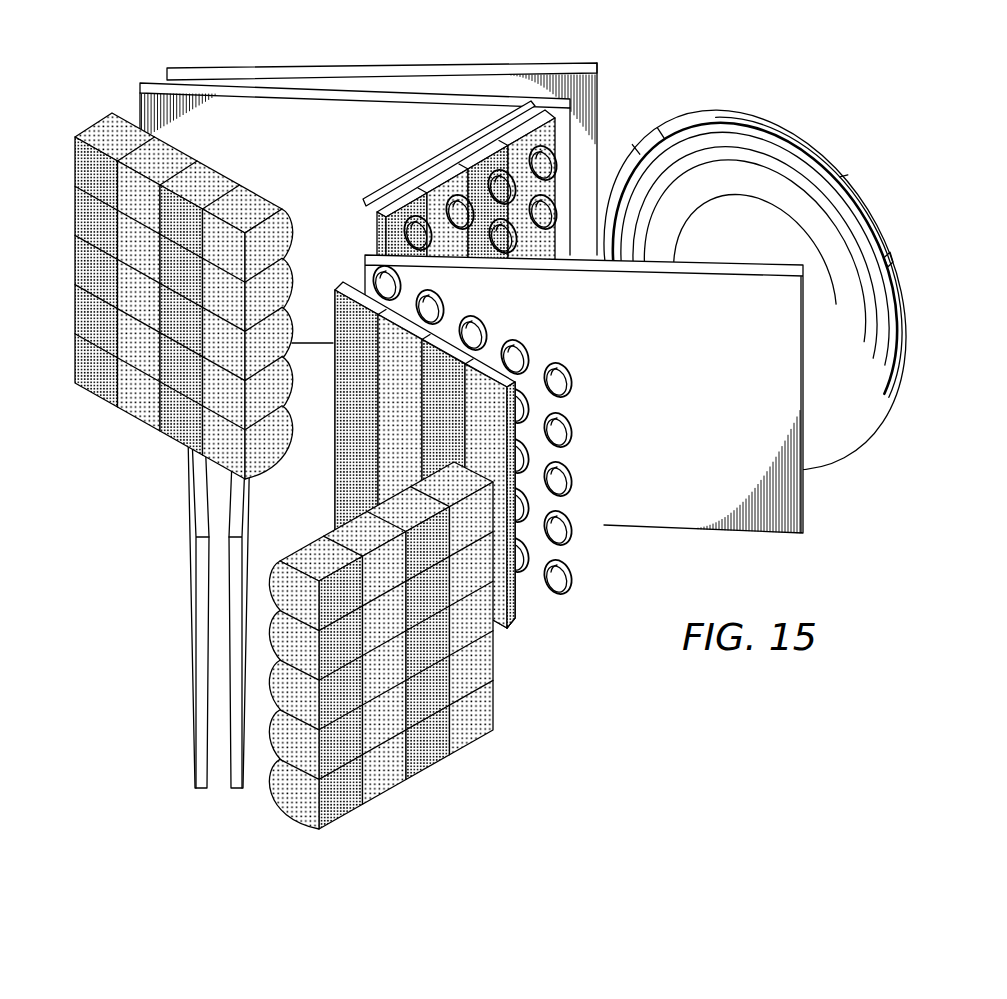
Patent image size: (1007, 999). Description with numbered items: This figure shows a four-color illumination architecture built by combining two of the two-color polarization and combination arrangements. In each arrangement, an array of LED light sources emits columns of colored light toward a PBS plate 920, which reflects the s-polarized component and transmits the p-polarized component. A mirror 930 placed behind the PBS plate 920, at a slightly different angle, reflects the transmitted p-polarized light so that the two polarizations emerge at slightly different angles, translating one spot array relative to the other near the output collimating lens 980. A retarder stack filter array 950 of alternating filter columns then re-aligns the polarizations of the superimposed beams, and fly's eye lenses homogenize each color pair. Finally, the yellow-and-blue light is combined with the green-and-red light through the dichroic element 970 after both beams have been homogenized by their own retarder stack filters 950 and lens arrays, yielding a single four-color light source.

The PBS plate 920 is at (332, 168).
The mirror 930 is at (337, 72).
The retarder stack filter array 950 is at (441, 153).
The dichroic element 970 is at (700, 413).
The output collimating lens 980 is at (519, 613).